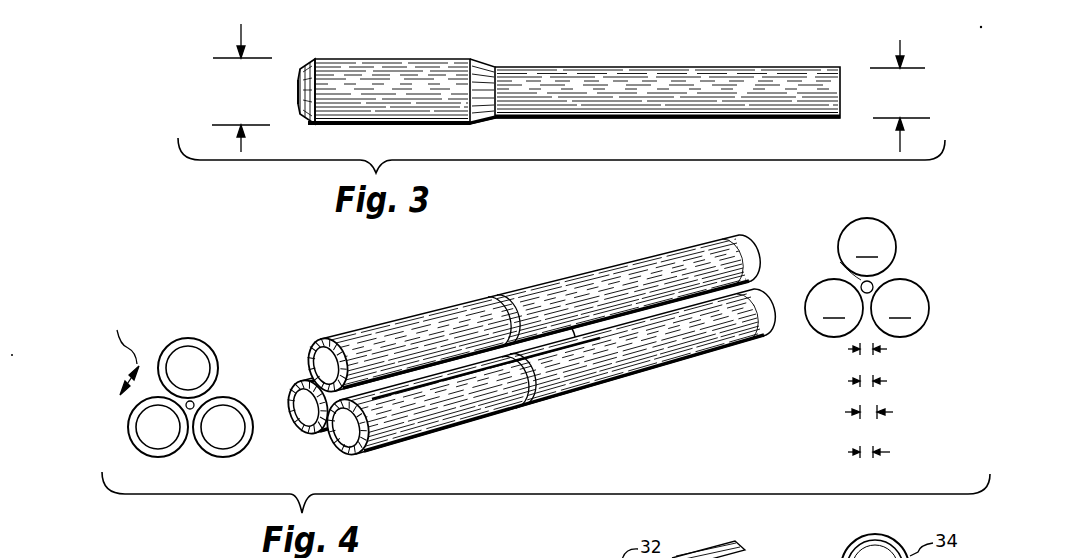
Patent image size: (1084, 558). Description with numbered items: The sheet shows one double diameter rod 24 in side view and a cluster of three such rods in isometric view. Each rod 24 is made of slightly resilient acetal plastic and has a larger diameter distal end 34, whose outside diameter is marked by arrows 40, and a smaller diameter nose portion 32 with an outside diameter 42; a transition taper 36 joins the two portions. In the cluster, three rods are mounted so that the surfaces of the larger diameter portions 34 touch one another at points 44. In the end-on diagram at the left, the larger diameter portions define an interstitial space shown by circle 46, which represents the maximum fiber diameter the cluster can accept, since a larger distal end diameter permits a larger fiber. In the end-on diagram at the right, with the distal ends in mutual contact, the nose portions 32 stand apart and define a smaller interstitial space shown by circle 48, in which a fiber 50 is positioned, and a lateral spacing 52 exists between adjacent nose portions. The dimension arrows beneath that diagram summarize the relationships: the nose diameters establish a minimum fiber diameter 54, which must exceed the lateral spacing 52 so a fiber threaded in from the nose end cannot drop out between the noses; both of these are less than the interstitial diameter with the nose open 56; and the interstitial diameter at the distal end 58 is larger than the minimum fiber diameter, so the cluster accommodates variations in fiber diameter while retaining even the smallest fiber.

In FIG. 3, the double diameter rod 24 is at (569, 90).
In FIG. 3, the nose portion 32 is at (665, 119).
In FIG. 4, the nose portion 32 is at (592, 280).
In FIG. 3, the distal end 34 is at (388, 125).
In FIG. 4, the distal end 34 is at (208, 338).
In FIG. 3, the transition taper 36 is at (485, 125).
In FIG. 3, the arrows illustrating outside diameter of distal end 40 is at (241, 33).
In FIG. 3, the outside diameter of nose portion 42 is at (902, 45).
In FIG. 4, the points of mutual contact 44 is at (200, 408).
In FIG. 4, the circle illustrating interstitial space of larger diameter portions 46 is at (150, 416).
In FIG. 4, the circle illustrating interstitial space of nose portions 48 is at (855, 278).
In FIG. 4, the fiber 50 is at (876, 283).
In FIG. 4, the lateral spacing 52 is at (848, 382).
In FIG. 4, the minimum fiber diameter 54 is at (848, 350).
In FIG. 4, the interstitial diameter with nose open 56 is at (846, 413).
In FIG. 4, the interstitial diameter at distal end 58 is at (848, 453).